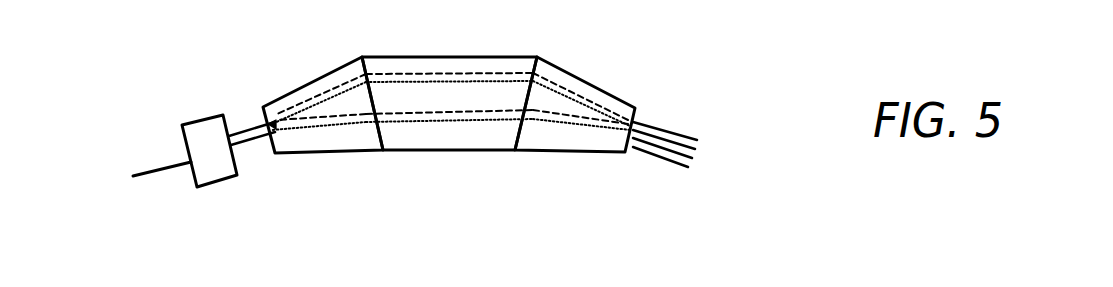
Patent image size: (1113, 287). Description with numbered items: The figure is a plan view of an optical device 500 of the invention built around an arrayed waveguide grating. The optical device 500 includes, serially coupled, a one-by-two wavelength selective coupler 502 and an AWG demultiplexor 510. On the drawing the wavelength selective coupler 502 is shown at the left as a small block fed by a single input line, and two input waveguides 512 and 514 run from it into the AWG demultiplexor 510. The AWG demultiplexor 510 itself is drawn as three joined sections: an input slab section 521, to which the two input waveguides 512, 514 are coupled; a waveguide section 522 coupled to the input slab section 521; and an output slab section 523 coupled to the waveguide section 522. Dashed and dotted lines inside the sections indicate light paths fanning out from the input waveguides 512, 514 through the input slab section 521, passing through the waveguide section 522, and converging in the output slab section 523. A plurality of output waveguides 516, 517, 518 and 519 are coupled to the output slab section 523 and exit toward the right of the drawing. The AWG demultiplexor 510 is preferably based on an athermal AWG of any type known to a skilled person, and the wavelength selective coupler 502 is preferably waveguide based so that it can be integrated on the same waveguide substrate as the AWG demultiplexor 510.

The optical device 500 is at (750, 32).
The wavelength selective coupler 502 is at (220, 183).
The AWG demultiplexor 510 is at (436, 128).
The input waveguide 512 is at (250, 130).
The input waveguide 514 is at (250, 142).
The output waveguide 516 is at (683, 133).
The output waveguide 517 is at (693, 150).
The output waveguide 518 is at (695, 158).
The output waveguide 519 is at (682, 167).
The input slab section 521 is at (349, 155).
The waveguide section 522 is at (448, 152).
The output slab section 523 is at (562, 153).